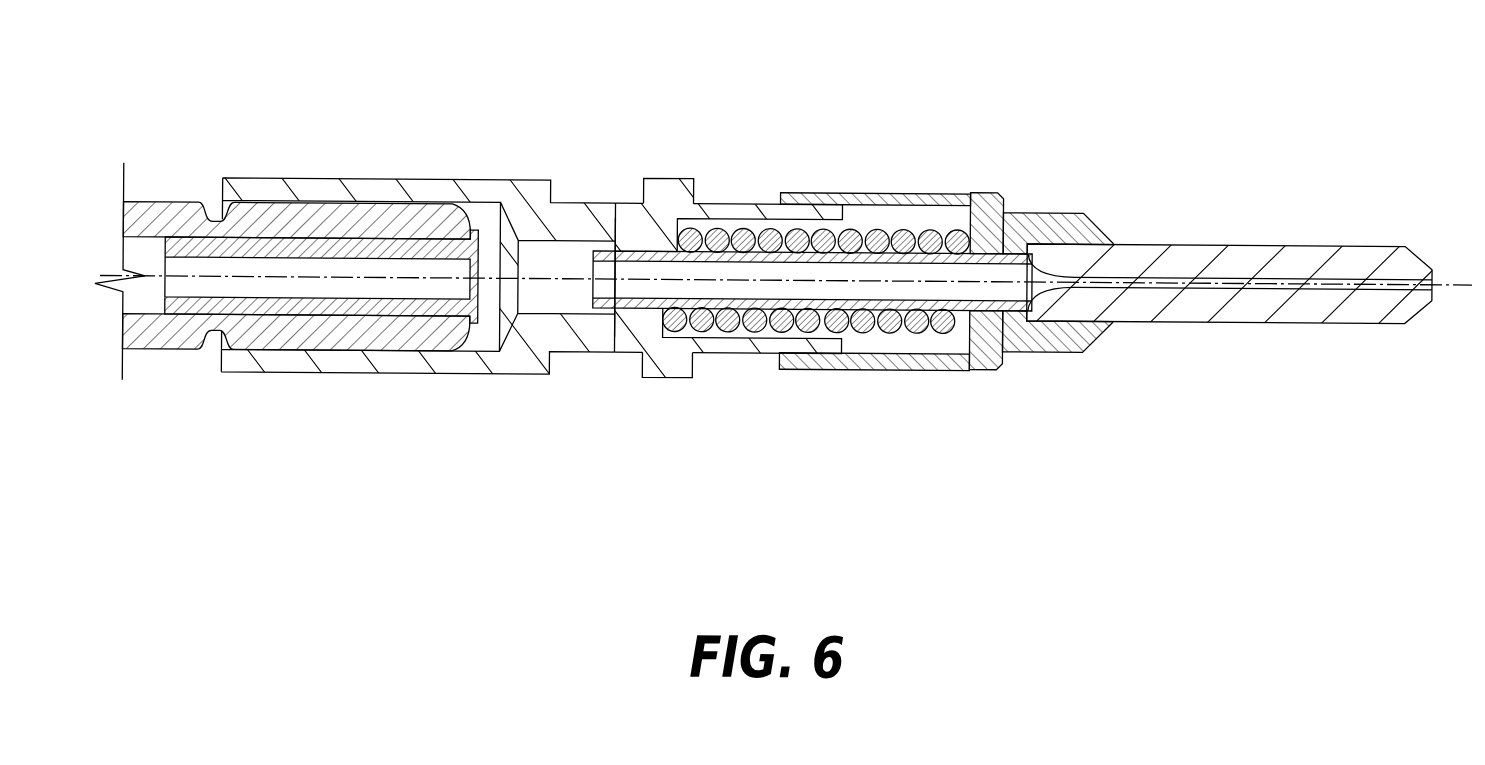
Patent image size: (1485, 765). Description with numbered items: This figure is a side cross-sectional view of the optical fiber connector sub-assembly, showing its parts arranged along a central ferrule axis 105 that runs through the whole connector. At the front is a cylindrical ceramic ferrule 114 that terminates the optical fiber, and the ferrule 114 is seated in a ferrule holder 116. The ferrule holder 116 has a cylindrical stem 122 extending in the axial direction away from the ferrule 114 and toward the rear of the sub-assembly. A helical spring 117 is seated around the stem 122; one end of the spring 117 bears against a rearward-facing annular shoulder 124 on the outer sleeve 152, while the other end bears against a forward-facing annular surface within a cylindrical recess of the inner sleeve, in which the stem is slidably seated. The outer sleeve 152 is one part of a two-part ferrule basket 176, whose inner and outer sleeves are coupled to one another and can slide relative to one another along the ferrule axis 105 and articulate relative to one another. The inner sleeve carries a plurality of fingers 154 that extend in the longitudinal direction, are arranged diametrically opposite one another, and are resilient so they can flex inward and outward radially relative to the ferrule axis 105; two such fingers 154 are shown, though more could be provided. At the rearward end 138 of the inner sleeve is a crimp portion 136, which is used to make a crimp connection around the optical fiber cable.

The ferrule axis 105 is at (1465, 278).
The cylindrical ceramic ferrule 114 is at (1250, 262).
The ferrule holder 116 is at (652, 309).
The helical spring 117 is at (947, 322).
The cylindrical stem 122 is at (982, 254).
The rearward-facing annular shoulder 124 is at (967, 338).
The crimp portion 136 is at (343, 187).
The rearward end 138 is at (225, 159).
The outer sleeve 152 is at (624, 214).
The fingers 154 is at (663, 340).
The two-part ferrule basket 176 is at (881, 167).